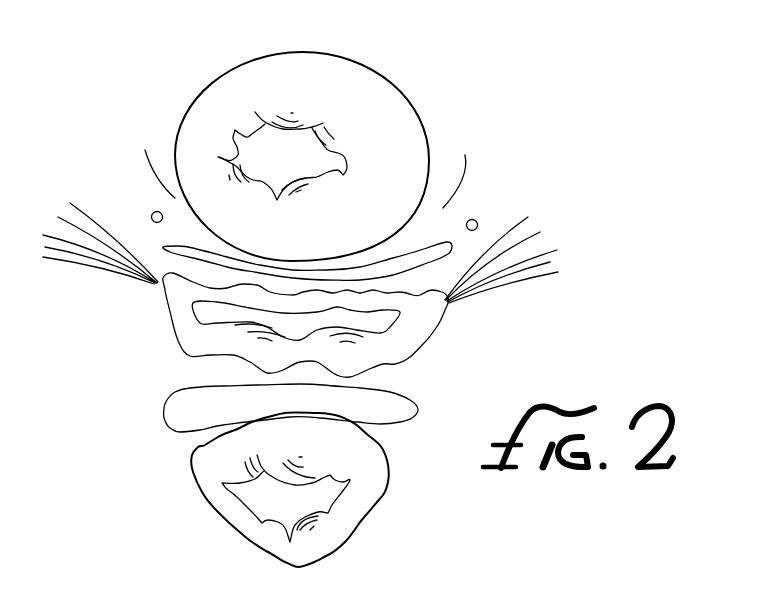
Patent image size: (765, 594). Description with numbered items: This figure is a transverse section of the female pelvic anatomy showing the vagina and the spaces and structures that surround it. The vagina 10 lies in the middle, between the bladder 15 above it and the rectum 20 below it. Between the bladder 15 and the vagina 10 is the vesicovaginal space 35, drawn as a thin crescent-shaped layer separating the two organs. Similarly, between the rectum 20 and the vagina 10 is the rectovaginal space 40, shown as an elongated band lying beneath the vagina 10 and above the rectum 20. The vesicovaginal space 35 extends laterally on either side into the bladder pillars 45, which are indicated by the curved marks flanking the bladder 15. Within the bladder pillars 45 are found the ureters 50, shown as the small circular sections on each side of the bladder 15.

The vagina 10 is at (430, 333).
The bladder 15 is at (395, 83).
The rectum 20 is at (369, 500).
The vesicovaginal space 35 is at (432, 257).
The rectovaginal space 40 is at (167, 394).
The bladder pillars 45 is at (306, 166).
The ureters 50 is at (472, 224).